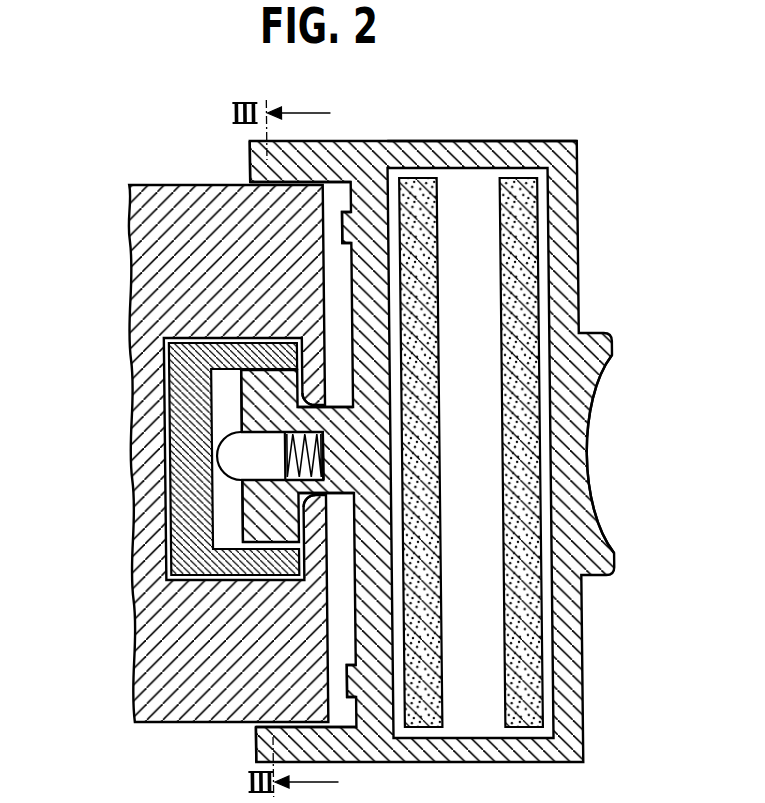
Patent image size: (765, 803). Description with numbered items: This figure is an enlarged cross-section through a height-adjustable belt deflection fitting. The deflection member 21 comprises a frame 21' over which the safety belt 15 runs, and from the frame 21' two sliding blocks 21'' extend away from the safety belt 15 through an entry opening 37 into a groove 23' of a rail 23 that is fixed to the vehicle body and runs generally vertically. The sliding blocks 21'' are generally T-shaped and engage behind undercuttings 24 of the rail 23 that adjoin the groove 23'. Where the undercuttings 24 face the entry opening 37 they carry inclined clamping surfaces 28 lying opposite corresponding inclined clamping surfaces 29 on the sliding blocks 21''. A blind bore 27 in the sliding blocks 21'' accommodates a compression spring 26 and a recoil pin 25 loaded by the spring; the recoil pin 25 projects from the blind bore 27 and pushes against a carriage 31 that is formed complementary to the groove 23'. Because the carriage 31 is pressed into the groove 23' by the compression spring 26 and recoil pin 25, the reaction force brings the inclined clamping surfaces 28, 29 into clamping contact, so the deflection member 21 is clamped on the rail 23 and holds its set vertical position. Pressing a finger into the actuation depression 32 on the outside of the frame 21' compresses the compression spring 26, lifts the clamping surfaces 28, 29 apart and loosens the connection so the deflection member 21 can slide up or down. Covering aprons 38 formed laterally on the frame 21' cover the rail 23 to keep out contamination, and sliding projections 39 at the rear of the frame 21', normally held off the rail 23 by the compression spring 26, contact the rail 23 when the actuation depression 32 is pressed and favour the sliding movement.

The safety belt 15 is at (505, 245).
The deflection member 21 is at (451, 451).
The frame 21' is at (482, 130).
The sliding blocks 21'' is at (189, 526).
The rail 23 is at (206, 453).
The groove 23' is at (192, 456).
The undercuttings 24 is at (309, 396).
The recoil pin 25 is at (217, 456).
The compression spring 26 is at (324, 473).
The blind bore 27 is at (292, 488).
The inclined clamping surfaces 28 is at (328, 398).
The inclined clamping surfaces 29 is at (278, 385).
The carriage 31 is at (184, 360).
The actuation depression 32 is at (585, 417).
The entry opening 37 is at (325, 420).
The covering aprons 38 is at (263, 162).
The sliding projections 39 is at (347, 228).